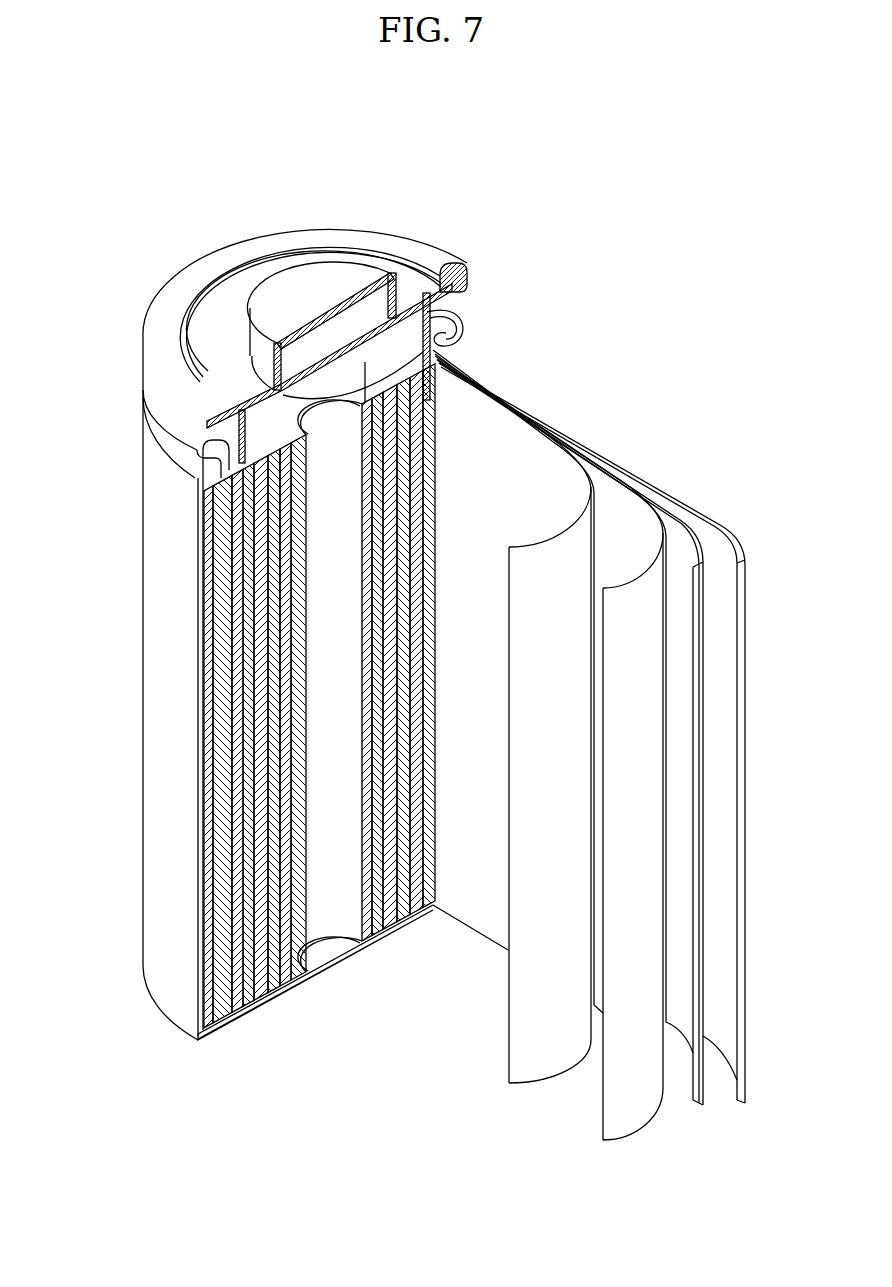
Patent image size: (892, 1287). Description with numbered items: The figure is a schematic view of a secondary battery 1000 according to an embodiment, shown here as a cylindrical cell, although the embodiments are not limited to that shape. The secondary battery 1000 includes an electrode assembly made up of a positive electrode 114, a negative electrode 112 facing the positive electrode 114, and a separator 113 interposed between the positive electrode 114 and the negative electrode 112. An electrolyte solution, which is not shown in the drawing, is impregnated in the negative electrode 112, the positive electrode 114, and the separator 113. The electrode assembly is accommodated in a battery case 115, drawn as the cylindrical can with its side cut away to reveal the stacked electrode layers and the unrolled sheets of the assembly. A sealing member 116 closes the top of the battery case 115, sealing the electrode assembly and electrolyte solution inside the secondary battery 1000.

The secondary battery 1000 is at (590, 180).
The negative electrode 112 is at (700, 493).
The separator 113 is at (498, 418).
The positive electrode 114 is at (600, 467).
The battery case 115 is at (168, 685).
The sealing member 116 is at (298, 282).